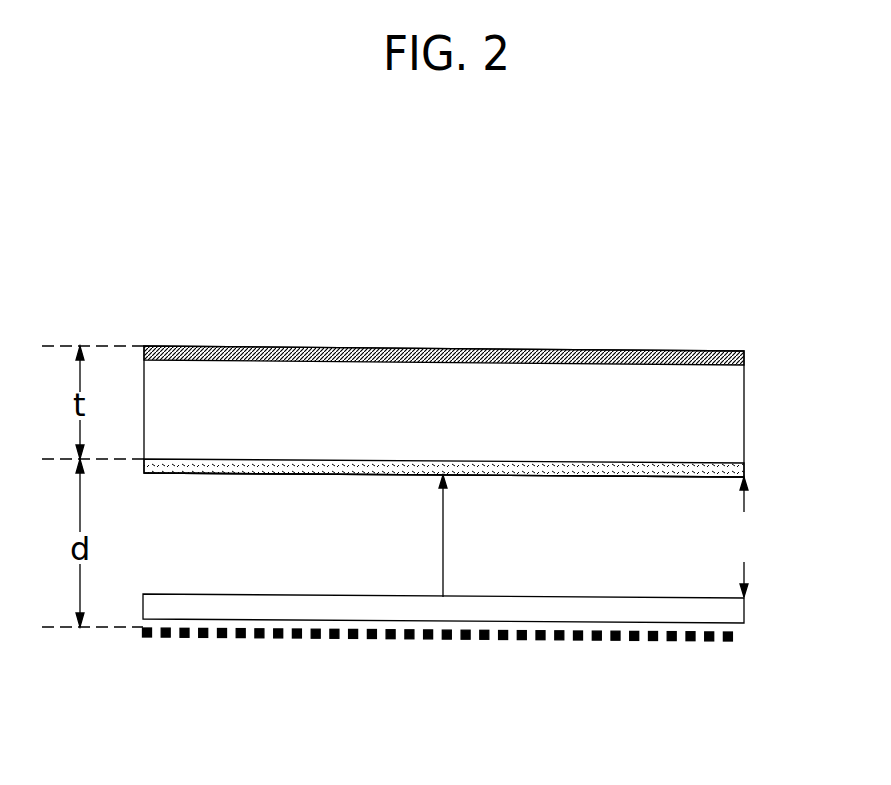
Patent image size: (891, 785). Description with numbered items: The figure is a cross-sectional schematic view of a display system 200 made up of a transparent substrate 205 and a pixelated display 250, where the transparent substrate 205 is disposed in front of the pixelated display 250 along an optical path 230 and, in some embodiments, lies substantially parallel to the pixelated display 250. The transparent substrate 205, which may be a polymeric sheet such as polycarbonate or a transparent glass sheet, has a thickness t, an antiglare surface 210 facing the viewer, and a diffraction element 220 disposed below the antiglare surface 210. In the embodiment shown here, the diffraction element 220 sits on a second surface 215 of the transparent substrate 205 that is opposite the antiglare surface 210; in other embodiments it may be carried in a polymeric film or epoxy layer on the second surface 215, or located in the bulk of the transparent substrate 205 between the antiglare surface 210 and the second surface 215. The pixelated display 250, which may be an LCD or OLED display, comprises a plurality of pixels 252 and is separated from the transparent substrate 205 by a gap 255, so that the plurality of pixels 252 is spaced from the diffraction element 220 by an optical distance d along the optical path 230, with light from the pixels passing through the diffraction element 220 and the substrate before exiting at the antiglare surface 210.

The display system 200 is at (477, 206).
The transparent substrate 205 is at (496, 411).
The antiglare surface 210 is at (621, 340).
The second surface 215 is at (218, 472).
The diffraction element 220 is at (382, 486).
The optical path 230 is at (469, 536).
The pixelated display 250 is at (489, 614).
The plurality of pixels 252 is at (726, 662).
The gap 255 is at (742, 537).